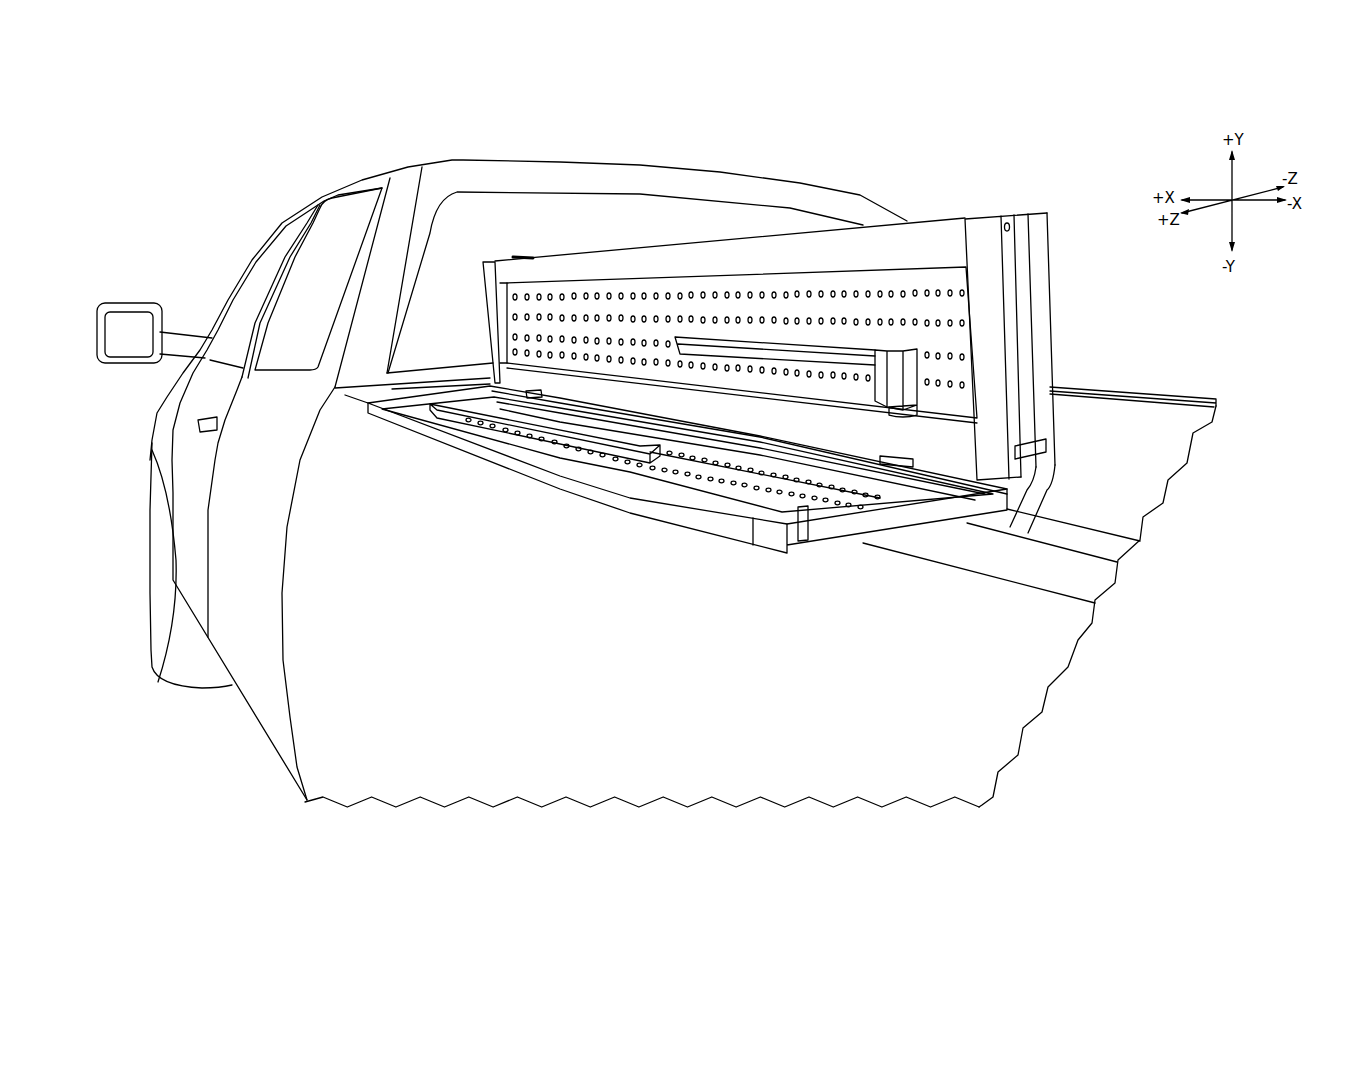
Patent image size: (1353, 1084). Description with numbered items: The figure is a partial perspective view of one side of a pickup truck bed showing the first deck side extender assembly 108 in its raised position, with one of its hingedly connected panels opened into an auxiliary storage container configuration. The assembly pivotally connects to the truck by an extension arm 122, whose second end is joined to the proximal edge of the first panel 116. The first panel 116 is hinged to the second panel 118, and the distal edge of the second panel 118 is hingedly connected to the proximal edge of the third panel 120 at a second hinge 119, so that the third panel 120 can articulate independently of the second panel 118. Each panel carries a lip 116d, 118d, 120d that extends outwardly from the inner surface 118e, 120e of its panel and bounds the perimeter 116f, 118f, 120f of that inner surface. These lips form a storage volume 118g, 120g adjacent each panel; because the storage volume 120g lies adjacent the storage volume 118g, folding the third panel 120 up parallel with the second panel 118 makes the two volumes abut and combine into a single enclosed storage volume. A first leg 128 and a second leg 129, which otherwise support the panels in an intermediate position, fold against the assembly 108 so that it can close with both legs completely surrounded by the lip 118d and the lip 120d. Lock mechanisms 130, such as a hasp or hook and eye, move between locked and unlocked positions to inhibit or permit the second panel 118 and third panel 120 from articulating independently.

The first deck side extender assembly 108 is at (983, 195).
The first panel 116 is at (1045, 212).
The lip 116d is at (1030, 298).
The perimeter 116f is at (1050, 232).
The second panel 118 is at (643, 248).
The lip 118d is at (948, 220).
The inner surface 118e is at (743, 312).
The perimeter 118f is at (1024, 372).
The storage volume 118g is at (633, 328).
The second hinge 119 is at (530, 394).
The third panel 120 is at (503, 462).
The lip 120d is at (713, 497).
The inner surface 120e is at (672, 462).
The perimeter 120f is at (848, 546).
The storage volume 120g is at (794, 494).
The extension arm 122 is at (1046, 492).
The first leg 128 is at (428, 409).
The second leg 129 is at (790, 357).
The lock mechanism 130 is at (1046, 447).